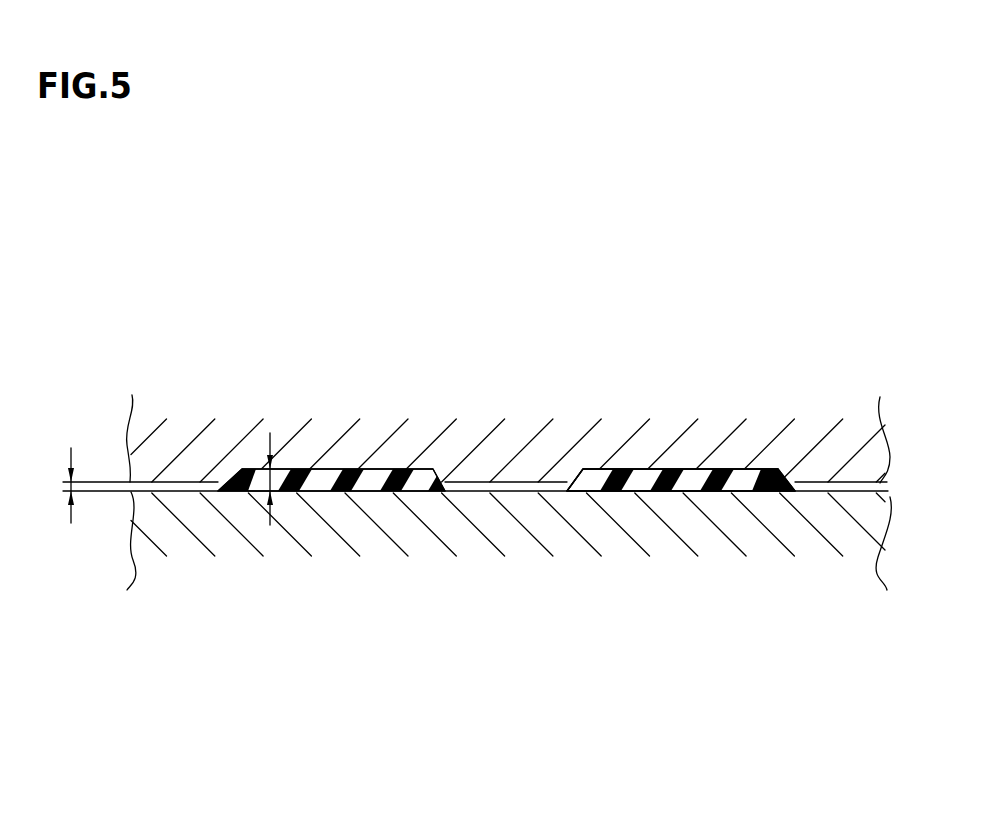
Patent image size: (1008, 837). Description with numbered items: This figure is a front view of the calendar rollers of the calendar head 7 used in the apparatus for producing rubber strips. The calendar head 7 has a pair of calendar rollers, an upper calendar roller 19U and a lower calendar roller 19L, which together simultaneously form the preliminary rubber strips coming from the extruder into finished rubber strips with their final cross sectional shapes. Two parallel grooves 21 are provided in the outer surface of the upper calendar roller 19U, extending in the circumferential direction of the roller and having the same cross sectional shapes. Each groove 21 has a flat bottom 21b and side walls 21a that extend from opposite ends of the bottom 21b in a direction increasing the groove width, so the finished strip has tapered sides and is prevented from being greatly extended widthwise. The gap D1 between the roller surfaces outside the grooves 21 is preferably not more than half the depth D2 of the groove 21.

The calendar head 7 is at (477, 504).
The upper calendar roller 19U is at (138, 442).
The lower calendar roller 19L is at (129, 495).
The groove 21 is at (318, 477).
The side wall 21a is at (583, 481).
The flat bottom 21b is at (643, 470).
The gap D1 is at (48, 485).
The depth D2 is at (270, 476).